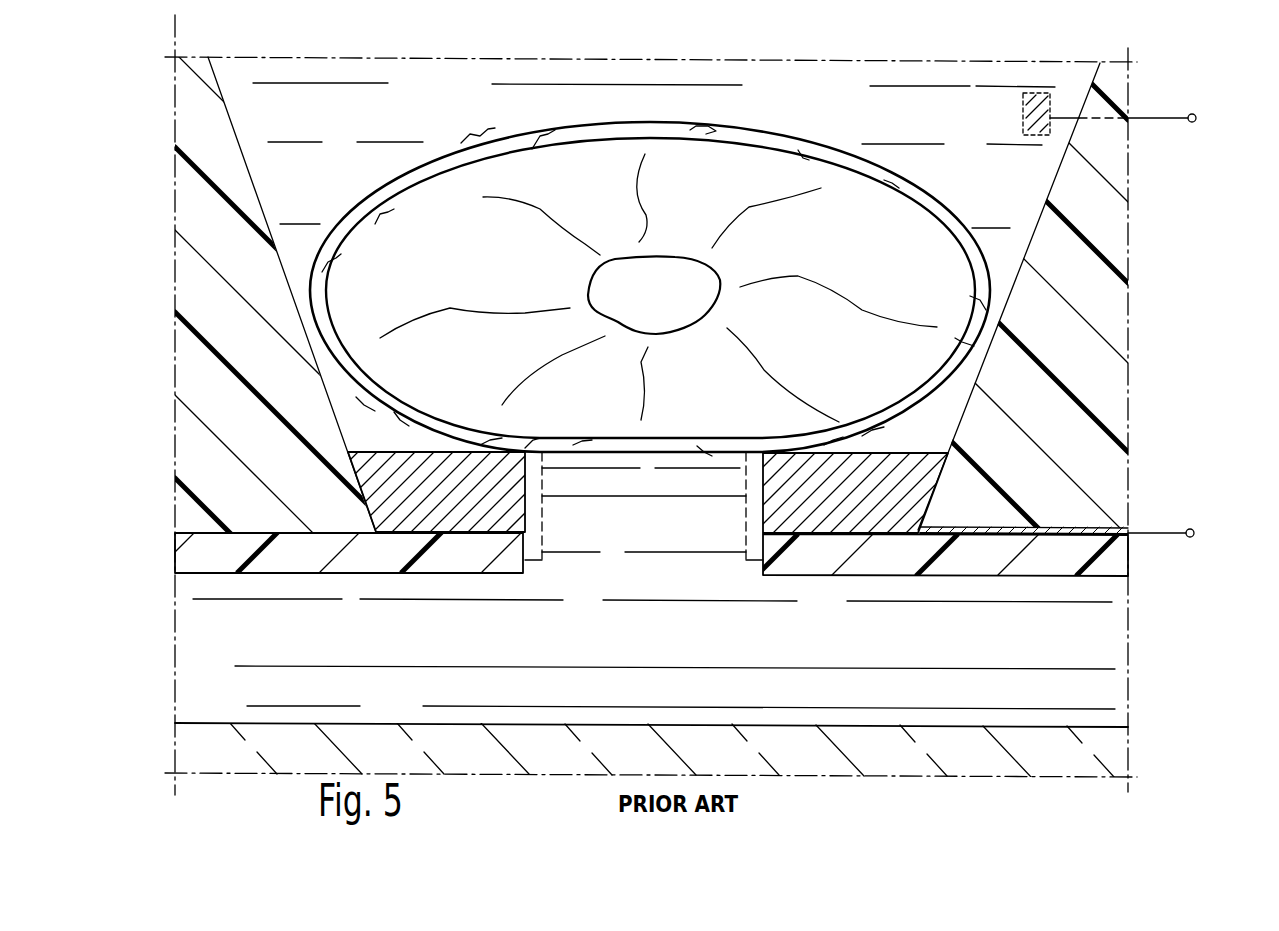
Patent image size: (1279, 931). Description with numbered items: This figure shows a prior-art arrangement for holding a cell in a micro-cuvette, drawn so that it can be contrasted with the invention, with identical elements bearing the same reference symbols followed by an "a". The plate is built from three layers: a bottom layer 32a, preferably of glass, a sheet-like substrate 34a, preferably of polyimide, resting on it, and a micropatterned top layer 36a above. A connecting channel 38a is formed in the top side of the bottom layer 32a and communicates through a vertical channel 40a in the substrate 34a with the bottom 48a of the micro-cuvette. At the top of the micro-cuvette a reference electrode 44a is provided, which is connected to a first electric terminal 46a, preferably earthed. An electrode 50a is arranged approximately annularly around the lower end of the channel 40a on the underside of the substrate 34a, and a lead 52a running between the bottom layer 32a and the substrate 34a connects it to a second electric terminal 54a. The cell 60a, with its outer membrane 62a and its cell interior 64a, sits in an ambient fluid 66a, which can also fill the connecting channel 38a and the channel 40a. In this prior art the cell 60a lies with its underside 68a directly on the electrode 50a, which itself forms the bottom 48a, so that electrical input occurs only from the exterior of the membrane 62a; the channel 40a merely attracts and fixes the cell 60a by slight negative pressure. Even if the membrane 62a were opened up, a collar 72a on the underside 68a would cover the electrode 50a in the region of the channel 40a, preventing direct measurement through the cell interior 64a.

The bottom layer 32a is at (1105, 755).
The substrate 34a is at (448, 553).
The top layer 36a is at (1098, 314).
The connecting channel 38a is at (1105, 648).
The channel 40a is at (757, 515).
The reference electrode 44a is at (1037, 92).
The first electric terminal 46a is at (1195, 113).
The bottom 48a is at (917, 443).
The electrode 50a is at (448, 473).
The lead 52a is at (1092, 528).
The second electric terminal 54a is at (1190, 537).
The cell 60a is at (661, 269).
The membrane 62a is at (765, 129).
The cell interior 64a is at (558, 192).
The ambient fluid 66a is at (427, 120).
The underside 68a is at (669, 439).
The collar 72a is at (533, 520).